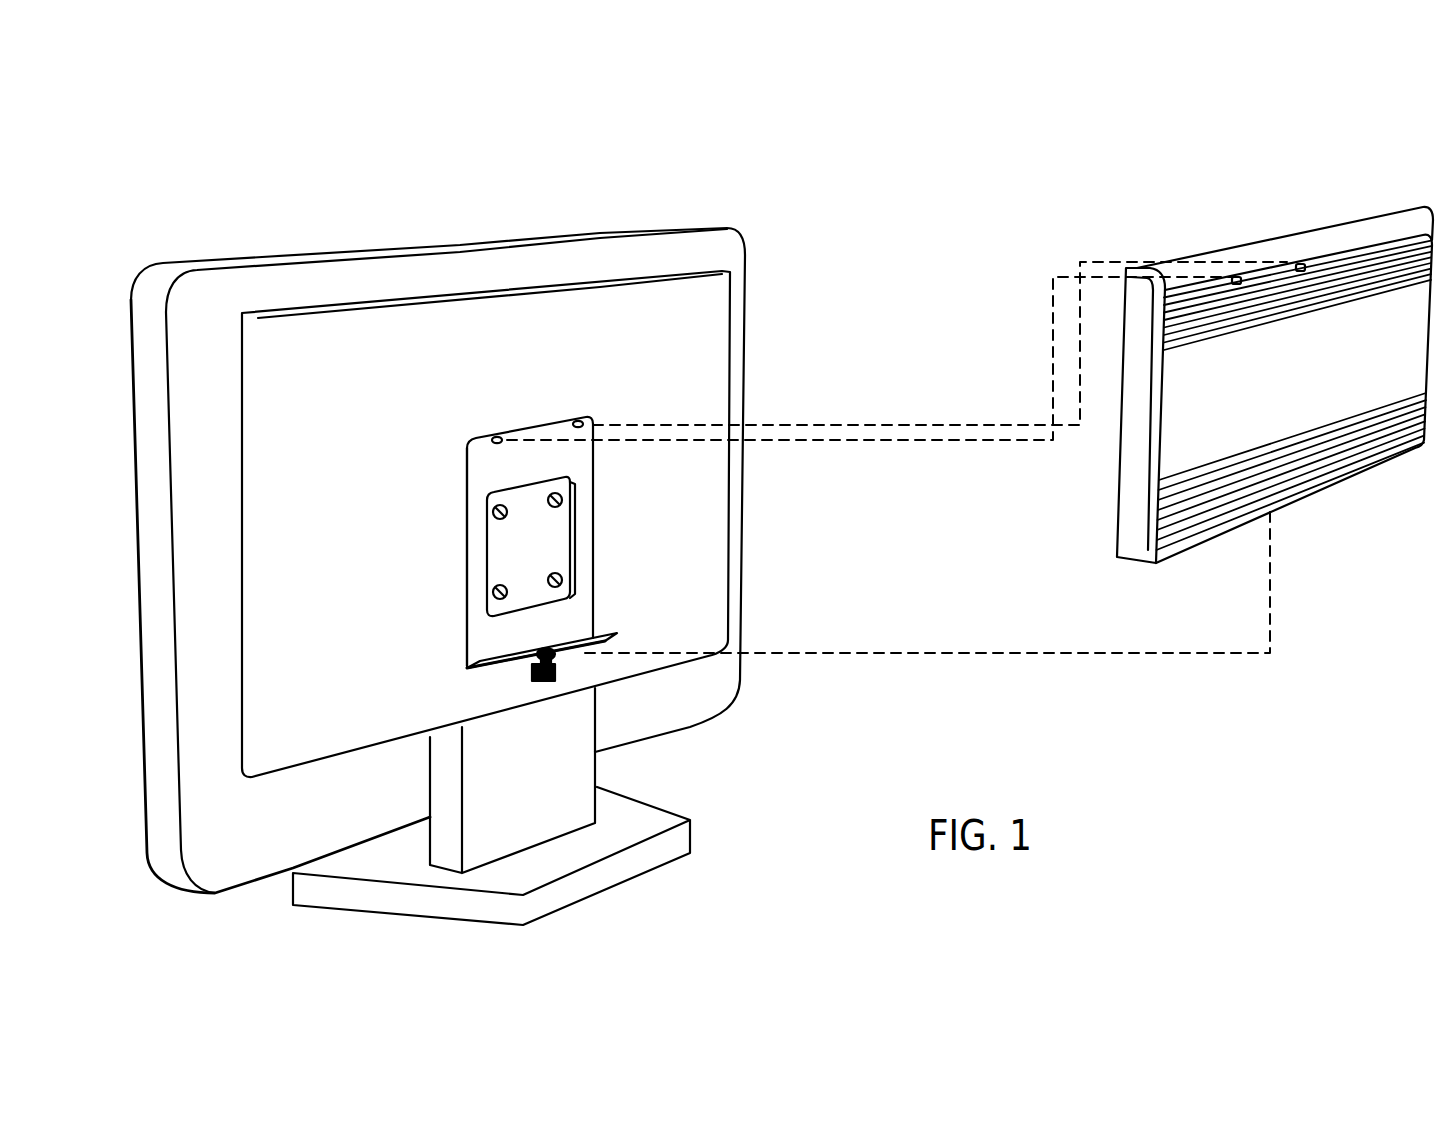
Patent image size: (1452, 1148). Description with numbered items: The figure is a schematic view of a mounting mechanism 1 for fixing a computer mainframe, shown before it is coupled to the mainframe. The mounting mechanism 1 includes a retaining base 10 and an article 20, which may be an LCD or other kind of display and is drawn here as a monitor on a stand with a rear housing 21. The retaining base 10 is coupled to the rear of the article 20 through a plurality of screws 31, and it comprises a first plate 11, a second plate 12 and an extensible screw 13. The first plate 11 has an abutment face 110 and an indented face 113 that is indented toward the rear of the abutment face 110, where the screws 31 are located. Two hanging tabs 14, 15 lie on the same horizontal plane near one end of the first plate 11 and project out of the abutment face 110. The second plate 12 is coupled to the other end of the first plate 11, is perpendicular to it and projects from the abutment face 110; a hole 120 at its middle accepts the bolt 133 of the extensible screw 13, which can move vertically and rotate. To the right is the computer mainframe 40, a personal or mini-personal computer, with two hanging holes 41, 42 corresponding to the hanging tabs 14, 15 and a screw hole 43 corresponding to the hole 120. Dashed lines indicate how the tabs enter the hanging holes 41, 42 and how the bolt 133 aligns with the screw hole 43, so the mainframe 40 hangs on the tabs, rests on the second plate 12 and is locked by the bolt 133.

The mounting mechanism 1 is at (486, 500).
The retaining base 10 is at (543, 473).
The first plate 11 is at (528, 420).
The abutment face 110 is at (473, 457).
The hanging tab 14 is at (492, 439).
The hanging tab 15 is at (578, 422).
The indented face 113 is at (543, 540).
The screws 31 is at (563, 500).
The second plate 12 is at (607, 640).
The bolt 133 is at (556, 652).
The hole 120 is at (557, 672).
The extensible screw 13 is at (548, 684).
The article 20 is at (550, 260).
The monitor back panel 21 is at (694, 317).
The computer mainframe 40 is at (1275, 347).
The hanging hole 41 is at (1236, 279).
The hanging hole 42 is at (1297, 266).
The screw hole 43 is at (1270, 508).